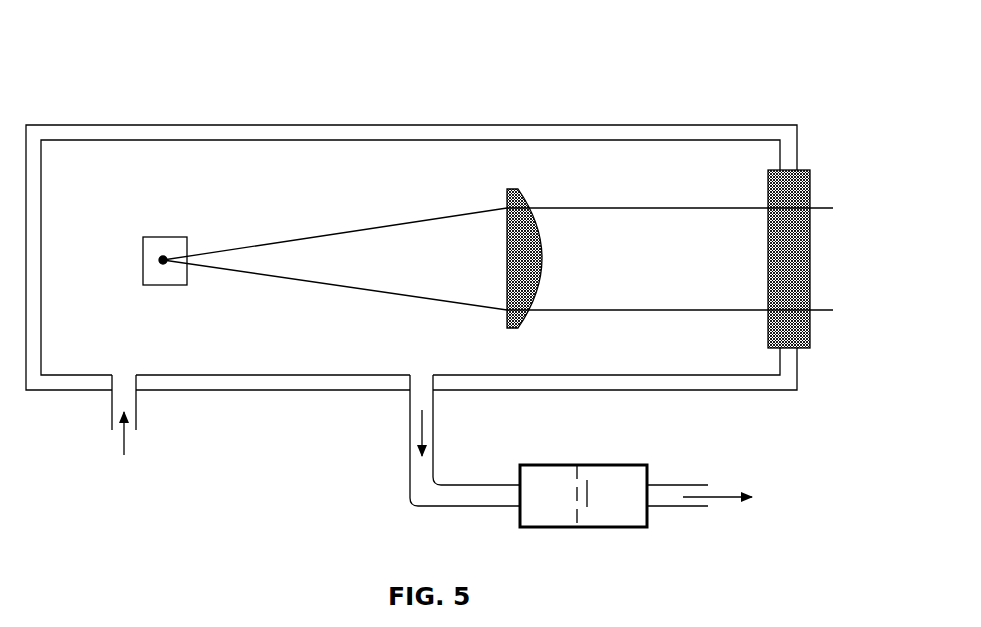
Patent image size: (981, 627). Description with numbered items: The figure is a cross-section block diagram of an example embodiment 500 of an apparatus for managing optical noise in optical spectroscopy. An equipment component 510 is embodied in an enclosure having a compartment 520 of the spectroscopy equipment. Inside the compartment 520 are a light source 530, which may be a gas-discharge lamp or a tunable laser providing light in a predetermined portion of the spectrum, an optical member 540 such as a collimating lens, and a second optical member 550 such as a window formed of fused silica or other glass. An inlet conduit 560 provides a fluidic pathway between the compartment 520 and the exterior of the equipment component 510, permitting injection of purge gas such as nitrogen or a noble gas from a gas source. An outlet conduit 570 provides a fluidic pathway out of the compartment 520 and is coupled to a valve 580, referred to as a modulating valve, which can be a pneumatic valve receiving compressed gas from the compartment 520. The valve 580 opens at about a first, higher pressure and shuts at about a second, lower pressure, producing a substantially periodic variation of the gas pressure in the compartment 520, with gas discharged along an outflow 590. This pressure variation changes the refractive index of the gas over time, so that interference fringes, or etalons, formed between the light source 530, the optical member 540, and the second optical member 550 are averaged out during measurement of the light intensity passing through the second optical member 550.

The example embodiment 500 is at (762, 40).
The equipment component 510 is at (703, 125).
The compartment 520 is at (288, 182).
The light source 530 is at (143, 237).
The optical member 540 is at (507, 205).
The second optical member 550 is at (768, 190).
The inlet conduit 560 is at (112, 408).
The outlet conduit 570 is at (410, 420).
The valve 580 is at (588, 465).
The exhaust flow 590 is at (681, 485).